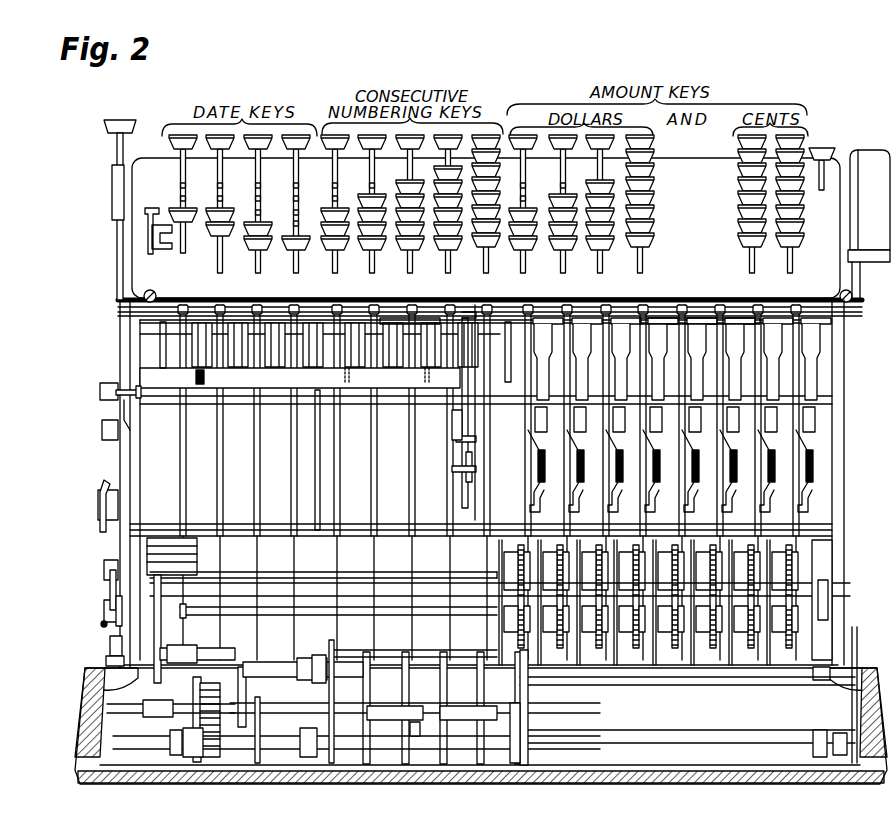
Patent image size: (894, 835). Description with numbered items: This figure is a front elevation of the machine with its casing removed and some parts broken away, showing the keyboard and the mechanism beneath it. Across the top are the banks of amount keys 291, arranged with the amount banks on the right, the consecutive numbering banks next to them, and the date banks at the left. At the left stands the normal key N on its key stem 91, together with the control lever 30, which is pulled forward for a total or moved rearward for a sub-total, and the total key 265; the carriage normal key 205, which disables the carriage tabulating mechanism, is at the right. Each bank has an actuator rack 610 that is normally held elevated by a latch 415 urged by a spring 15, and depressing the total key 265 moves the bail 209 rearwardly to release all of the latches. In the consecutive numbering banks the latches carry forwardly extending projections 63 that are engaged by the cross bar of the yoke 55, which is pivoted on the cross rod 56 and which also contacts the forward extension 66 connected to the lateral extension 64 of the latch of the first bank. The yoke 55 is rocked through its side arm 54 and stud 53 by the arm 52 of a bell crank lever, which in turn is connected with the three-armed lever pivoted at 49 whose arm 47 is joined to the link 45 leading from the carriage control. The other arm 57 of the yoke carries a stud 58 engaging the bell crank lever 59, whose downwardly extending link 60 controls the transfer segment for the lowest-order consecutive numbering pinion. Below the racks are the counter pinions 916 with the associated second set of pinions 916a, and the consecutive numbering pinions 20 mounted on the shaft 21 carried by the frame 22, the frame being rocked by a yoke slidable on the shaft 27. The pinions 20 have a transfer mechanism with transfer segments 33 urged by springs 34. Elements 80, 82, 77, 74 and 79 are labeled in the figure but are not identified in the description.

The normal key N is at (122, 118).
The key stem 91 is at (117, 148).
The control lever 30 is at (112, 186).
The total key 265 is at (154, 212).
The date key 80 is at (186, 212).
The amount keys 291 is at (298, 255).
The carriage normal key 205 is at (824, 146).
The latch 415 is at (394, 308).
The spring 15 is at (445, 310).
The lateral extension 64 is at (466, 310).
The cross rod 56 is at (337, 352).
The stud 82 is at (200, 360).
The bail 209 is at (246, 386).
The forwardly extending projections 63 is at (347, 380).
The yoke 55 is at (318, 392).
The arm of bell crank lever 52 is at (118, 412).
The side arm 54 is at (138, 400).
The stud 53 is at (130, 430).
The pivot 49 is at (100, 508).
The arm of yoke 57 is at (470, 414).
The stud 58 is at (478, 440).
The forward extension 66 is at (456, 420).
The bell crank lever 59 is at (466, 458).
The counter pinions 916 is at (520, 552).
The actuator rack 610 is at (498, 567).
The link 60 is at (476, 575).
The lever 77 is at (110, 592).
The link 74 is at (116, 606).
The pivot stud 79 is at (101, 624).
The arm 47 is at (110, 643).
The link 45 is at (106, 661).
The frame 22 is at (244, 655).
The shaft 21 is at (284, 662).
The shaft 27 is at (222, 668).
The pinions 20 is at (366, 654).
The transfer segments 33 is at (432, 703).
The springs 34 is at (496, 712).
The second set of pinions 916a is at (524, 650).